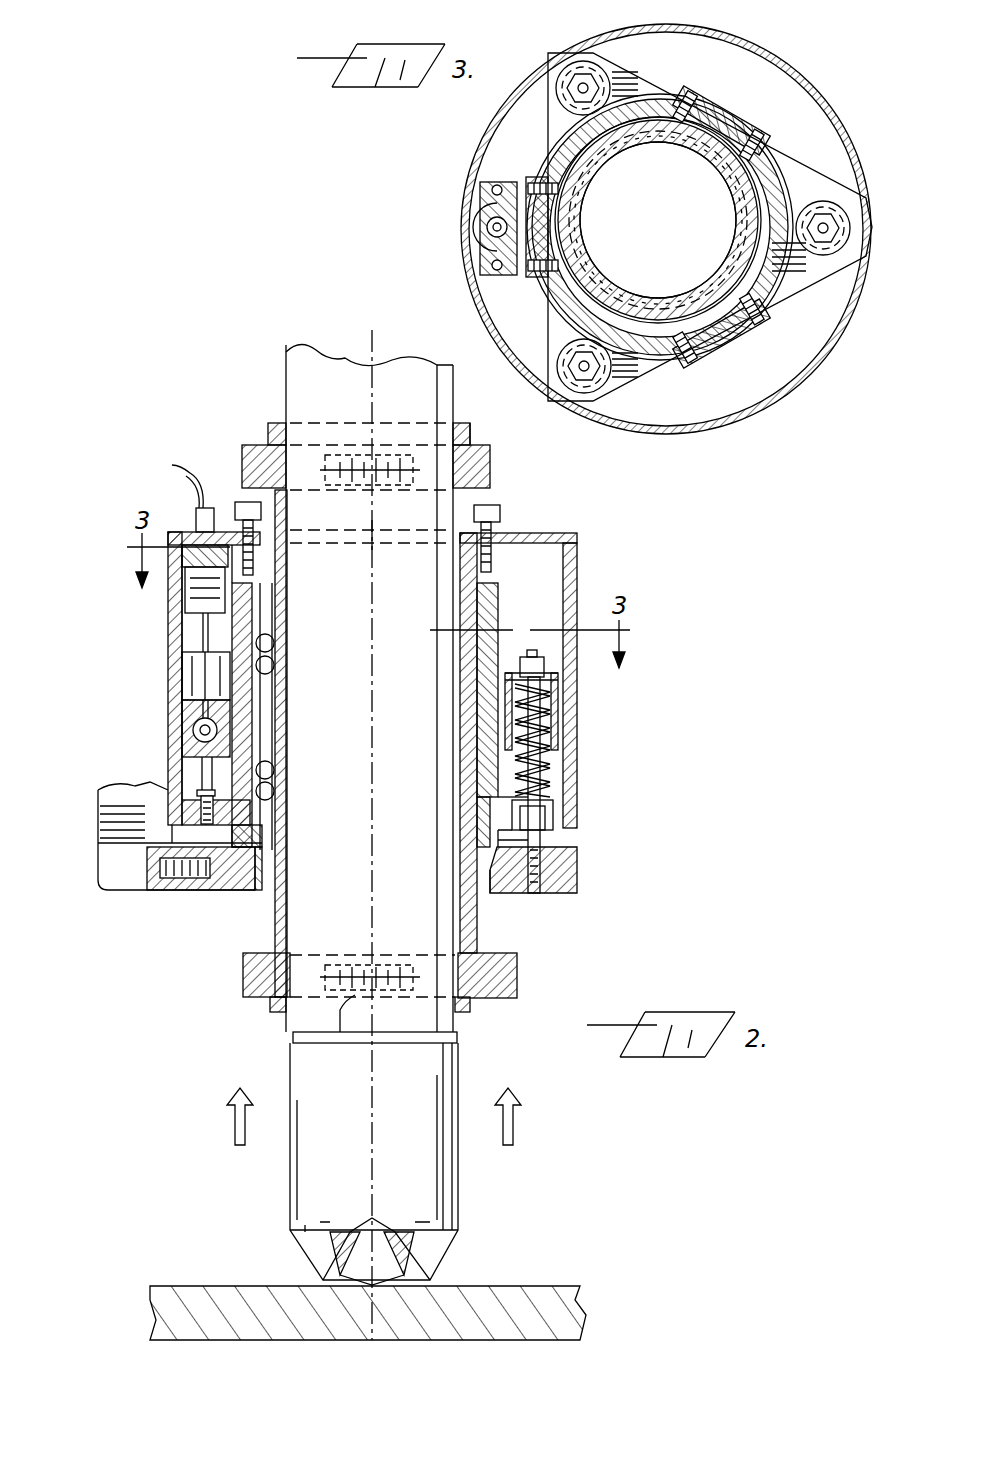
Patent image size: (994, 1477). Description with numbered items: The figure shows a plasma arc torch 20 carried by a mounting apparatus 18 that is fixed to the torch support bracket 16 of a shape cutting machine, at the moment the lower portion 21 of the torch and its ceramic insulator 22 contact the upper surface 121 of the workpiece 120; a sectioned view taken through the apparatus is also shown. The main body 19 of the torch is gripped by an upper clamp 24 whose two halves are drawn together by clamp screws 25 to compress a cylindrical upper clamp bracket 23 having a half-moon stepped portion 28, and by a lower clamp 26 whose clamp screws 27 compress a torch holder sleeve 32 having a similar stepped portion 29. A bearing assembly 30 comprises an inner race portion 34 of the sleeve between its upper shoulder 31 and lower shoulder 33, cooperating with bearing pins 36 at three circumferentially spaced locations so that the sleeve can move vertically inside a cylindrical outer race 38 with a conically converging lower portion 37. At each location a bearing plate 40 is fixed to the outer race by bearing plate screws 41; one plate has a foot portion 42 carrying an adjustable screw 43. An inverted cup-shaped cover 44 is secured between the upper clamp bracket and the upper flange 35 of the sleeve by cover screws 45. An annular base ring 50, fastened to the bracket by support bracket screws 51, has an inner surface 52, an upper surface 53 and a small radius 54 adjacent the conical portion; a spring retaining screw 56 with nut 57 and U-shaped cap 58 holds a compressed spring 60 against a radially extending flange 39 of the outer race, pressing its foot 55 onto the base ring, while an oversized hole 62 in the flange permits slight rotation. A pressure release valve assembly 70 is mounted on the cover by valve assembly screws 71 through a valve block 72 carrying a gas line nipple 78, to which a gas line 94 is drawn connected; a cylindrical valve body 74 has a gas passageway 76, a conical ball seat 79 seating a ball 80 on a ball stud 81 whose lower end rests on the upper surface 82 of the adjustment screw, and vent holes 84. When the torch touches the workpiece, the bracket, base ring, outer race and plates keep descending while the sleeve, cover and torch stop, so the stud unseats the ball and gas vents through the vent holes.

In FIG. 2, the torch support bracket 16 is at (120, 892).
In FIG. 3, the mounting apparatus 18 is at (530, 150).
In FIG. 2, the mounting apparatus 18 is at (580, 525).
In FIG. 3, the main body 19 is at (692, 232).
In FIG. 2, the main body 19 is at (284, 372).
In FIG. 2, the plasma arc torch 20 is at (280, 1155).
In FIG. 2, the lower portion 21 is at (450, 1192).
In FIG. 2, the ceramic insulator 22 is at (325, 1290).
In FIG. 2, the upper clamp bracket 23 is at (452, 532).
In FIG. 2, the upper clamp 24 is at (460, 460).
In FIG. 2, the clamp screws 25 is at (400, 455).
In FIG. 2, the lower clamp 26 is at (460, 960).
In FIG. 2, the clamp screws 27 is at (340, 1035).
In FIG. 2, the stepped portion 28 is at (470, 450).
In FIG. 2, the stepped portion 29 is at (475, 978).
In FIG. 2, the bearing assembly 30 is at (292, 668).
In FIG. 2, the upper shoulder 31 is at (270, 620).
In FIG. 3, the torch holder sleeve 32 is at (622, 150).
In FIG. 2, the torch holder sleeve 32 is at (468, 602).
In FIG. 2, the lower shoulder 33 is at (265, 840).
In FIG. 3, the inner race portion 34 is at (727, 118).
In FIG. 2, the inner race portion 34 is at (255, 700).
In FIG. 2, the upper flange 35 is at (458, 560).
In FIG. 3, the bearing pins 36 is at (700, 155).
In FIG. 2, the bearing pins 36 is at (272, 650).
In FIG. 2, the conically converging lower portion 37 is at (300, 880).
In FIG. 3, the outer race 38 is at (592, 170).
In FIG. 2, the outer race 38 is at (245, 750).
In FIG. 3, the radially extending flange 39 is at (548, 99).
In FIG. 2, the radially extending flange 39 is at (560, 802).
In FIG. 3, the bearing plate 40 is at (742, 150).
In FIG. 2, the bearing plate 40 is at (232, 640).
In FIG. 3, the bearing plate screws 41 is at (705, 100).
In FIG. 2, the bearing plate screws 41 is at (202, 608).
In FIG. 2, the foot portion 42 is at (222, 860).
In FIG. 2, the adjustable screw 43 is at (160, 838).
In FIG. 3, the cover 44 is at (790, 65).
In FIG. 2, the cover 44 is at (575, 575).
In FIG. 2, the cover screws 45 is at (240, 502).
In FIG. 2, the base ring 50 is at (200, 888).
In FIG. 2, the support bracket screws 51 is at (177, 880).
In FIG. 2, the inner surface 52 is at (500, 893).
In FIG. 2, the upper surface 53 is at (560, 836).
In FIG. 2, the radius 54 is at (510, 836).
In FIG. 2, the foot 55 is at (577, 862).
In FIG. 2, the spring retaining screw 56 is at (560, 772).
In FIG. 3, the spring retaining nut 57 is at (583, 85).
In FIG. 2, the spring retaining nut 57 is at (548, 665).
In FIG. 3, the spring retaining cap 58 is at (548, 75).
In FIG. 2, the spring retaining cap 58 is at (562, 700).
In FIG. 3, the compressed spring 60 is at (612, 50).
In FIG. 2, the compressed spring 60 is at (572, 752).
In FIG. 2, the hole 62 is at (520, 822).
In FIG. 3, the pressure release valve assembly 70 is at (470, 215).
In FIG. 2, the pressure release valve assembly 70 is at (170, 675).
In FIG. 3, the valve assembly screws 71 is at (492, 193).
In FIG. 2, the valve assembly screws 71 is at (170, 572).
In FIG. 3, the valve block 72 is at (495, 240).
In FIG. 2, the valve block 72 is at (185, 592).
In FIG. 2, the valve body 74 is at (183, 660).
In FIG. 2, the gas passageway 76 is at (185, 700).
In FIG. 2, the gas line nipple 78 is at (195, 518).
In FIG. 2, the ball seat 79 is at (190, 725).
In FIG. 2, the ball 80 is at (192, 740).
In FIG. 2, the ball stud 81 is at (165, 792).
In FIG. 2, the upper surface 82 is at (160, 808).
In FIG. 2, the vent holes 84 is at (200, 772).
In FIG. 2, the cable 94 is at (172, 468).
In FIG. 2, the workpiece 120 is at (180, 1285).
In FIG. 2, the upper surface 121 is at (470, 1285).